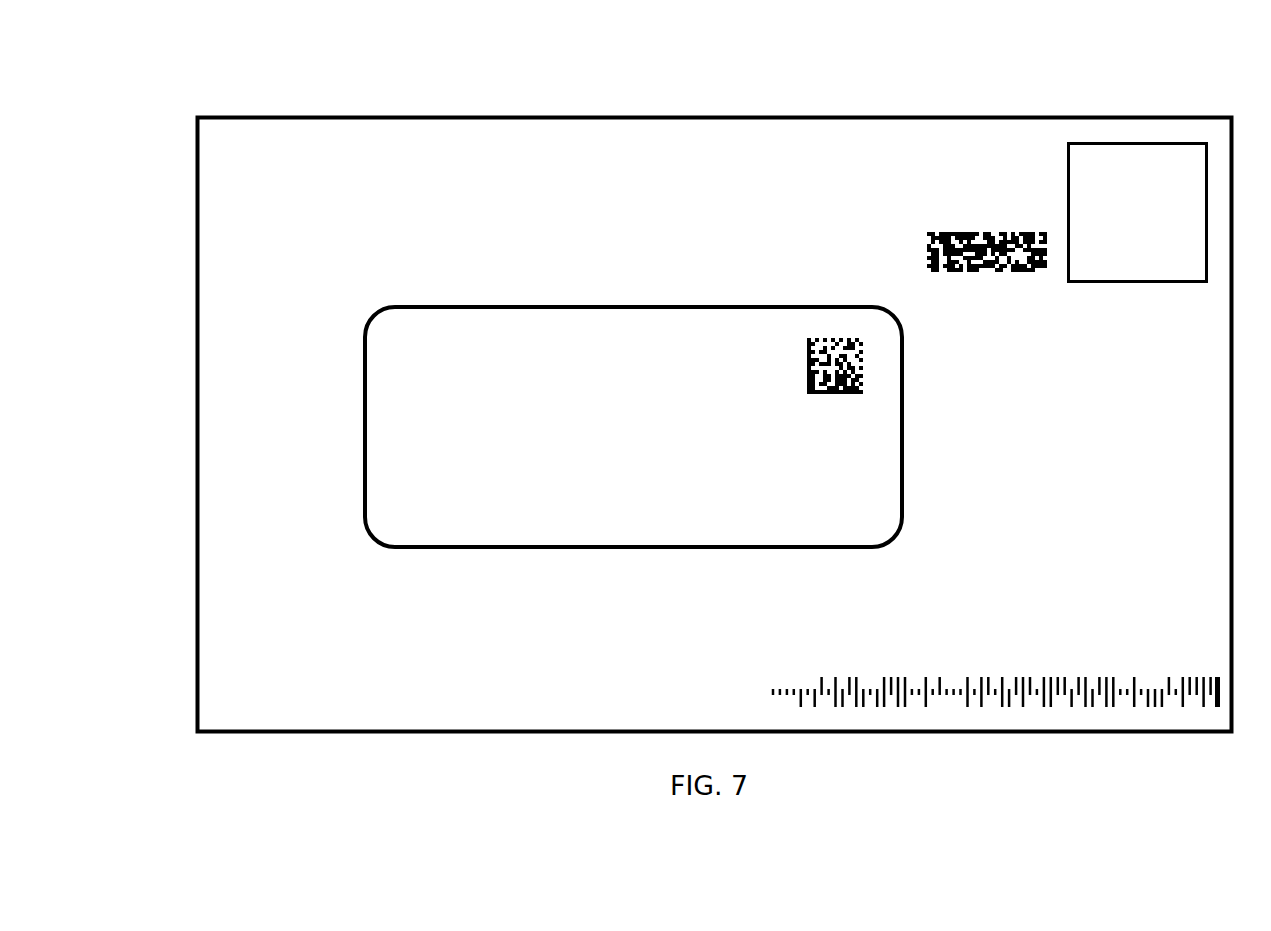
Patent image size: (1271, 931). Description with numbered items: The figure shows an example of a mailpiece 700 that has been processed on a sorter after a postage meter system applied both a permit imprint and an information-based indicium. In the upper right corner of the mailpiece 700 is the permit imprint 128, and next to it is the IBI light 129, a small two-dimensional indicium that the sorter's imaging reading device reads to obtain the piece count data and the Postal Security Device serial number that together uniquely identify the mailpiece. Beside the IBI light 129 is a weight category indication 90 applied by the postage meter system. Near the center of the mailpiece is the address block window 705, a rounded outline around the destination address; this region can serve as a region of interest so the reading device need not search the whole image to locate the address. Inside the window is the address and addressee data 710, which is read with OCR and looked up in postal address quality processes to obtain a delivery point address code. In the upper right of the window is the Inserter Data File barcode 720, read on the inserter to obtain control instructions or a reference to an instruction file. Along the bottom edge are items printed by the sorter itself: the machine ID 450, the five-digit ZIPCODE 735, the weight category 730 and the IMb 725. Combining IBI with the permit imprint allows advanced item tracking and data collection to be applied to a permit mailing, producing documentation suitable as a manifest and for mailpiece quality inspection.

The mailpiece 700 is at (512, 95).
The permit imprint 128 is at (1095, 150).
The IBI light 129 is at (950, 232).
The weight category indication 90 is at (872, 242).
The address block window 705 is at (370, 435).
The address and addressee data 710 is at (413, 465).
The Inserter Data File barcode 720 is at (808, 333).
The machine ID 450 is at (520, 675).
The 5 digit ZIPCODE 735 is at (635, 668).
The weight category 730 is at (725, 670).
The IMb 725 is at (1087, 668).